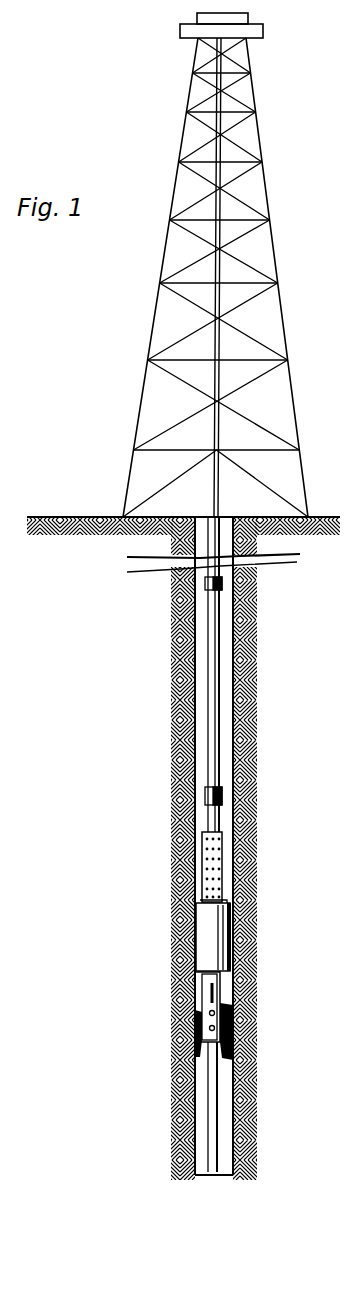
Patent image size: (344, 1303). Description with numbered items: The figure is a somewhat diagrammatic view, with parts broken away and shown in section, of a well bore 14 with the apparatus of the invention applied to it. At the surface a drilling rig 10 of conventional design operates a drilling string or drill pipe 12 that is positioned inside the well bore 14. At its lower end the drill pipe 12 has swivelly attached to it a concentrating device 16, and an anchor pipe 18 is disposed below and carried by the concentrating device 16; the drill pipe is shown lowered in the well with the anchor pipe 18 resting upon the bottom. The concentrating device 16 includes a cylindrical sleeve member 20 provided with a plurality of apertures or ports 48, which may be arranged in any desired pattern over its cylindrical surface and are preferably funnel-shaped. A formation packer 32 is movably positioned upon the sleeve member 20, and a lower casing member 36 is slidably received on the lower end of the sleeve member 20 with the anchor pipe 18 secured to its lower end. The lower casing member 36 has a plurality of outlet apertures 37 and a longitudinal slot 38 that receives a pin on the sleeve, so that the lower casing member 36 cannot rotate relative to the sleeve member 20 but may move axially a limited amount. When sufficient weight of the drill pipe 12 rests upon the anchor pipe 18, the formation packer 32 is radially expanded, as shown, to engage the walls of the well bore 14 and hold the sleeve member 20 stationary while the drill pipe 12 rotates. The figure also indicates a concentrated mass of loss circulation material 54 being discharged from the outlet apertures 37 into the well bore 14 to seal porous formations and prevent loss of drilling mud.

The drilling rig 10 is at (267, 183).
The drill pipe 12 is at (217, 415).
The well bore 14 is at (227, 688).
The concentrating device 16 is at (214, 1012).
The anchor pipe 18 is at (212, 1085).
The sleeve member 20 is at (221, 863).
The formation packer 32 is at (220, 933).
The lower casing member 36 is at (208, 1004).
The outlet apertures 37 is at (235, 1013).
The longitudinal slot 38 is at (217, 993).
The ports 48 is at (213, 843).
The concentrated mass of loss circulation material 54 is at (200, 1055).